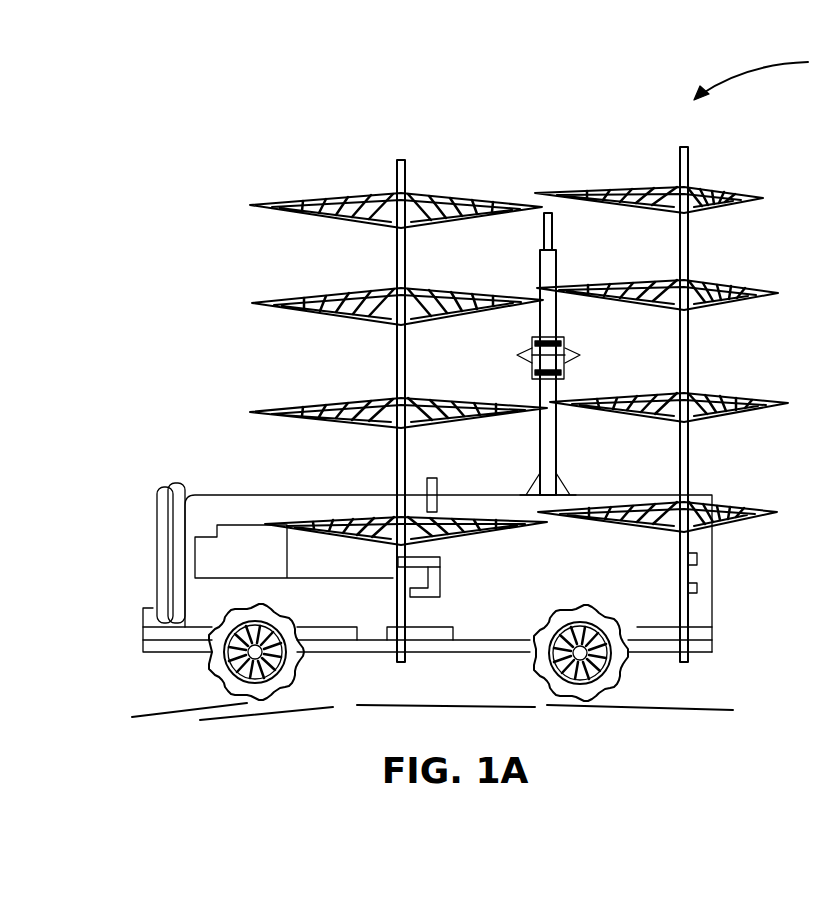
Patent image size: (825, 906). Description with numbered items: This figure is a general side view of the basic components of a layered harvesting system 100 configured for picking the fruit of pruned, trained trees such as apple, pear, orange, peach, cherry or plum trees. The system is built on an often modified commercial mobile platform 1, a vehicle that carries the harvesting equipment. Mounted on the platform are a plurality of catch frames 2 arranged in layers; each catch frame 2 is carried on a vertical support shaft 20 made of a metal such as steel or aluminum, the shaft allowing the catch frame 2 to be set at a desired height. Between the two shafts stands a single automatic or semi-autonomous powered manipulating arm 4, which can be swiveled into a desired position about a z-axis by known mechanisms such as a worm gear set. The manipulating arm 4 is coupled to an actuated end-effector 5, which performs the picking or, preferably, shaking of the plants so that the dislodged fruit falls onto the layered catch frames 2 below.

The layered harvesting system 100 is at (238, 68).
The mobile platform 1 is at (206, 486).
The catch frame 2 is at (298, 202).
The manipulator arm 4 is at (540, 277).
The end-effector 5 is at (564, 349).
The vertical support shaft 20 is at (395, 472).